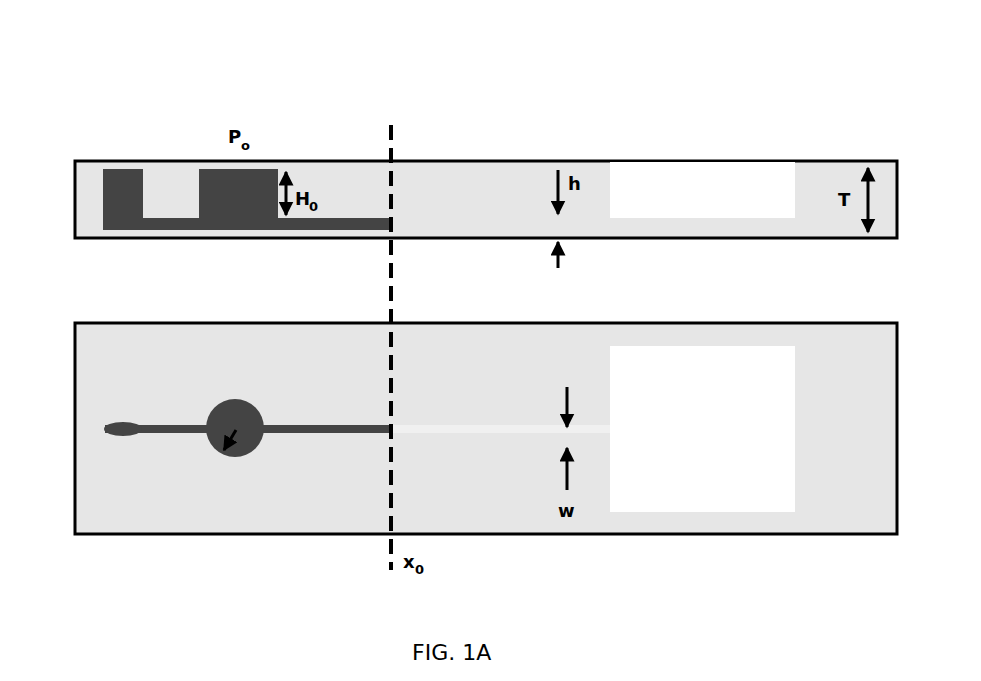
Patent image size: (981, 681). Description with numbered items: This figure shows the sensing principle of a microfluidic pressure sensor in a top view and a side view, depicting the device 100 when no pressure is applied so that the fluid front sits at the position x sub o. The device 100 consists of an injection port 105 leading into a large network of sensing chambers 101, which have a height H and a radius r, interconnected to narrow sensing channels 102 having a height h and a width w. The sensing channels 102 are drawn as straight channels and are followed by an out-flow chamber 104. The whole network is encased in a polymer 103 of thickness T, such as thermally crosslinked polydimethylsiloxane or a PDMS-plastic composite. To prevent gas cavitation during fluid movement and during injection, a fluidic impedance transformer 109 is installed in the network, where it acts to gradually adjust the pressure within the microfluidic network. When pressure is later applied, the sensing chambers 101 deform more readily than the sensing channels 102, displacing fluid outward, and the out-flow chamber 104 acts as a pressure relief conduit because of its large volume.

The device 100 is at (486, 286).
The sensing chambers 101 is at (235, 395).
The sensing channels 102 is at (524, 415).
The polymer 103 is at (97, 160).
The out-flow chamber 104 is at (720, 208).
The injection port 105 is at (122, 420).
The fluidic impedance transformer 109 is at (277, 438).